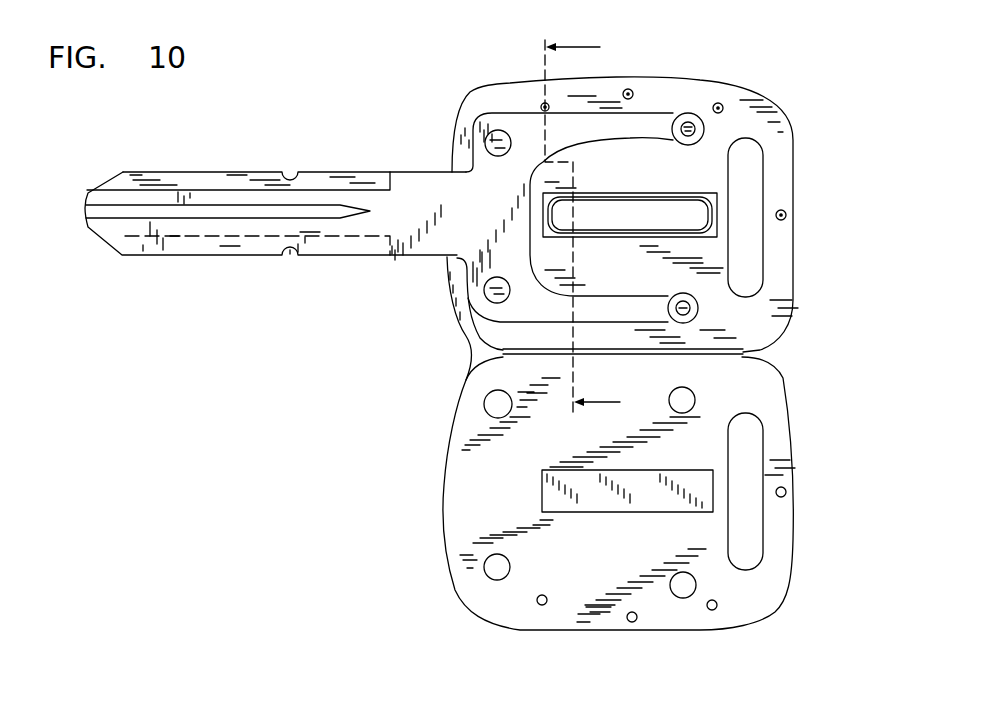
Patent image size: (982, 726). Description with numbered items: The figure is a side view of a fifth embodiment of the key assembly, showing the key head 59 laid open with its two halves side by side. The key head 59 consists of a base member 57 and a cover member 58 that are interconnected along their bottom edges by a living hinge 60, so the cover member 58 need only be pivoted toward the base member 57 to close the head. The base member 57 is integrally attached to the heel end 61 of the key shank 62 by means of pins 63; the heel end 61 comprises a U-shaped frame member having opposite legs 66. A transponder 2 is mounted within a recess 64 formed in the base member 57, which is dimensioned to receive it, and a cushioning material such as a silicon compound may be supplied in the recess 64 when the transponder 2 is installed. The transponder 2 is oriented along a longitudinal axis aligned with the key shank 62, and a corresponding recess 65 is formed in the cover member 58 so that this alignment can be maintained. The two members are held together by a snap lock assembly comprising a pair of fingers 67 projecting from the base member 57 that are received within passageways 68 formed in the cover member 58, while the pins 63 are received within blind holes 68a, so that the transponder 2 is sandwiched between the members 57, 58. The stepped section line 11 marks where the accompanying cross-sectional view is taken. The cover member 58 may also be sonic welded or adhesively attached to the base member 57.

The transponder 2 is at (641, 205).
The section line 11- 11 is at (570, 226).
The base member 57 is at (754, 103).
The cover member 58 is at (517, 612).
The key head 59 is at (436, 128).
The living hinge 60 is at (488, 344).
The heel end 61 is at (448, 260).
The key shank 62 is at (240, 258).
The pins 63 is at (498, 130).
The recess 64 is at (655, 216).
The recess 65 is at (660, 505).
The legs 66 is at (578, 132).
The fingers 67 is at (714, 105).
The passageways 68 is at (786, 497).
The blind holes 68a is at (694, 398).